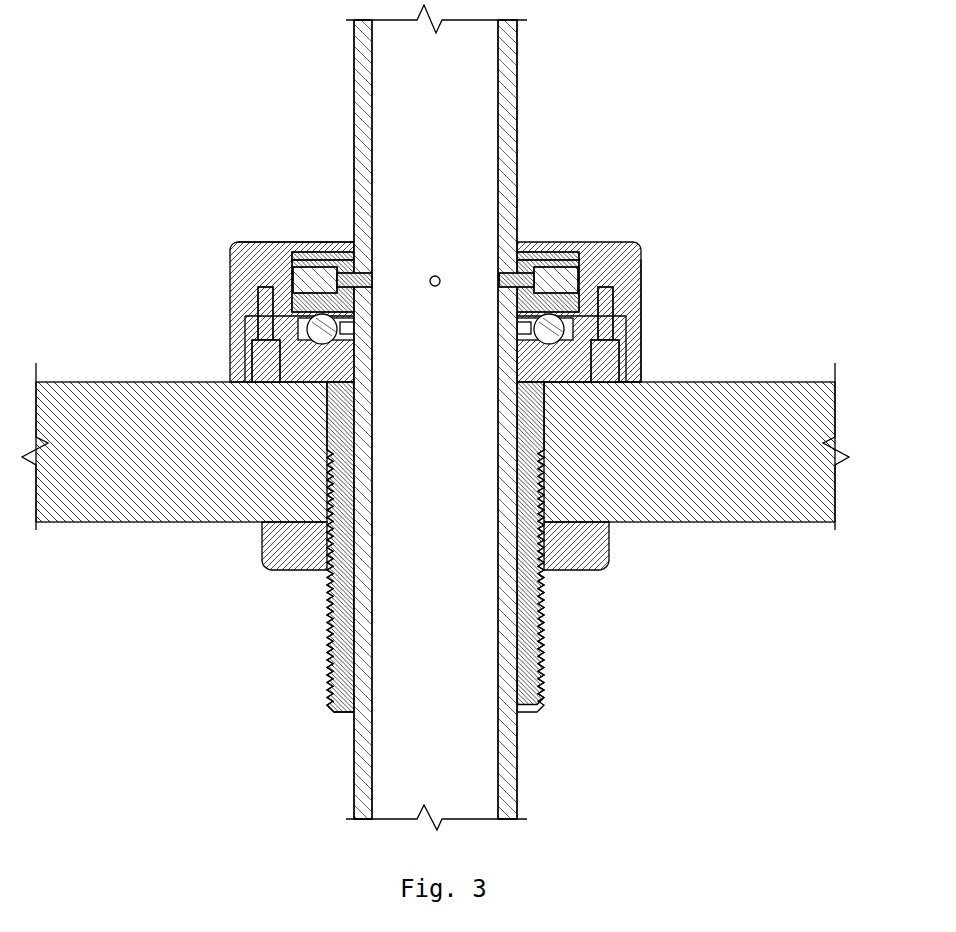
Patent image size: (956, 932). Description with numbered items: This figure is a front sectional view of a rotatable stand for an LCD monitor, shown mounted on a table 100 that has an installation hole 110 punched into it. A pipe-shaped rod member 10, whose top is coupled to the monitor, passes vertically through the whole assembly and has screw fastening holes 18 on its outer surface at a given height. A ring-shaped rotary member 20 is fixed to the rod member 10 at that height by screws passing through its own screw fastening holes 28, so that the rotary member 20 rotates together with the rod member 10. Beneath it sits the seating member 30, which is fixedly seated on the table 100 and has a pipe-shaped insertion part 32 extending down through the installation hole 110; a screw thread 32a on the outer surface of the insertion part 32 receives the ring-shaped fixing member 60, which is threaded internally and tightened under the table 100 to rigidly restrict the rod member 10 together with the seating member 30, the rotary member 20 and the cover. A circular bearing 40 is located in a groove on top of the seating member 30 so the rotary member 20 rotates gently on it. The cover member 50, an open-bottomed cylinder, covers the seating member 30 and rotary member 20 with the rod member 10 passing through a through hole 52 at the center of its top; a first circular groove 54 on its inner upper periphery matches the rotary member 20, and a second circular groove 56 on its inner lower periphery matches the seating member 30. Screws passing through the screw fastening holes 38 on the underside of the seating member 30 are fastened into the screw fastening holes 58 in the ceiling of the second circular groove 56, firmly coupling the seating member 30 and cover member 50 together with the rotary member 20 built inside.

The rod member 10 is at (520, 134).
The screw fastening holes 18 is at (437, 276).
The rotary member 20 is at (566, 250).
The screw fastening holes 28 is at (580, 242).
The seating member 30 is at (637, 318).
The insertion part 32 is at (326, 657).
The screw thread 32a is at (548, 626).
The screw fastening holes 38 is at (627, 343).
The circular bearing 40 is at (258, 301).
The cover member 50 is at (226, 236).
The through hole 52 is at (353, 212).
The first circular groove 54 is at (290, 256).
The second circular groove 56 is at (252, 342).
The screw fastening holes 58 is at (613, 290).
The fixing member 60 is at (292, 572).
The table 100 is at (722, 382).
The installation hole 110 is at (262, 542).